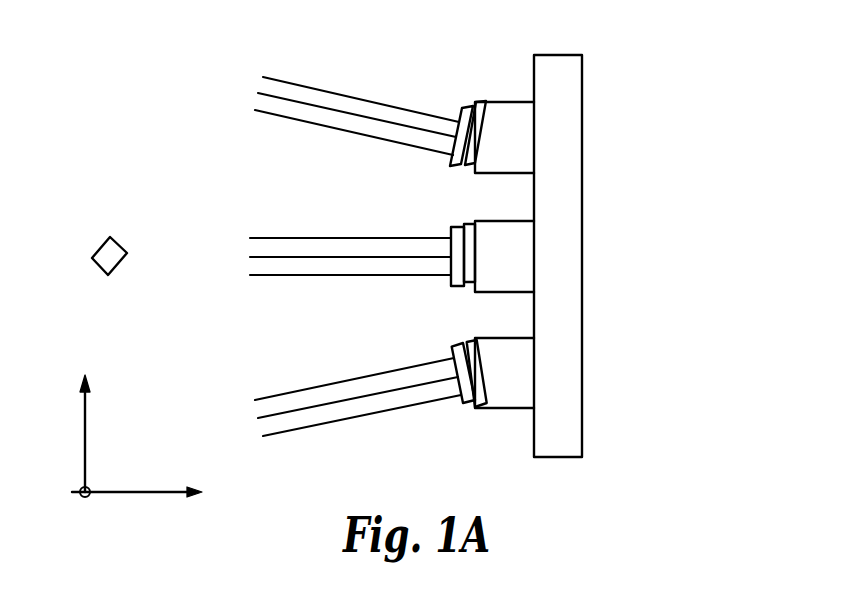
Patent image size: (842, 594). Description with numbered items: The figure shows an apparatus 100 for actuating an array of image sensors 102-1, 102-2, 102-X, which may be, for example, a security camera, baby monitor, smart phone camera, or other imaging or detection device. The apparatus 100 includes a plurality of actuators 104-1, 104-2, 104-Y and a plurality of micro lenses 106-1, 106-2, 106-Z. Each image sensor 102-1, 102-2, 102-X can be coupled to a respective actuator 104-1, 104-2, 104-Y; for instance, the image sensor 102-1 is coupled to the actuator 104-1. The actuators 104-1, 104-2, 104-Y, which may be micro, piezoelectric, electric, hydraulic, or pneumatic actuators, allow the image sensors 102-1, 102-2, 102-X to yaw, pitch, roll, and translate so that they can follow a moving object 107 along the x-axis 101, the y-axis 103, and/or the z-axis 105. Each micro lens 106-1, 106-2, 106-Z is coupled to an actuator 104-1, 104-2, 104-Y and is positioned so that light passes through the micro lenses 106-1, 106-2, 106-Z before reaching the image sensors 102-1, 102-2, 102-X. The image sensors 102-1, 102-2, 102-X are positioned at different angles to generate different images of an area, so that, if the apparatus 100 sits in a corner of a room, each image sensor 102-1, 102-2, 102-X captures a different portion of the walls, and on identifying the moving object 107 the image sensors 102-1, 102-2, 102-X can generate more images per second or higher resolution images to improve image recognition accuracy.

The apparatus 100 is at (557, 67).
The x-axis 101 is at (143, 493).
The image sensor 102-1 is at (478, 105).
The image sensor 102-2 is at (470, 283).
The image sensor 102-X is at (482, 408).
The y-axis 103 is at (85, 443).
The actuator 104-1 is at (515, 138).
The actuator 104-2 is at (515, 257).
The actuator 104-Y is at (515, 374).
The z-axis 105 is at (90, 483).
The micro lens 106-1 is at (457, 163).
The micro lens 106-2 is at (455, 228).
The micro lens 106-Z is at (453, 348).
The moving object 107 is at (103, 253).